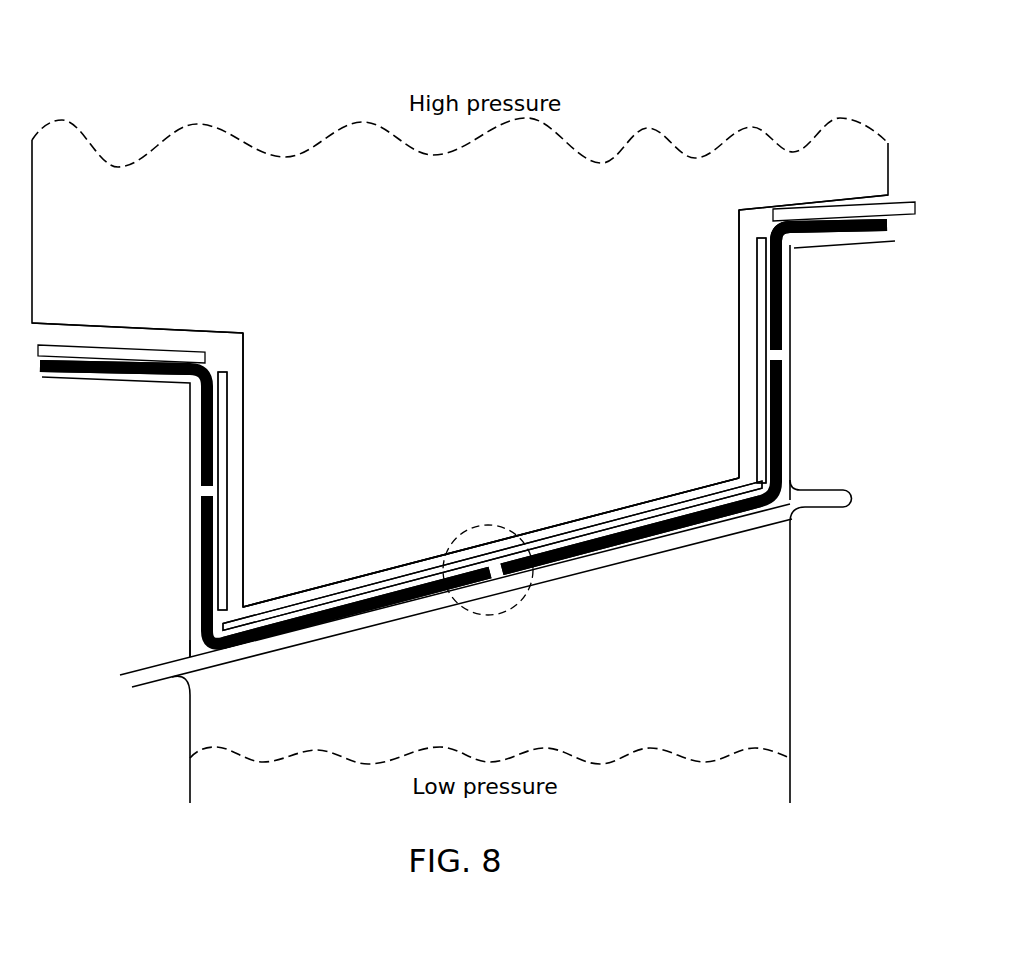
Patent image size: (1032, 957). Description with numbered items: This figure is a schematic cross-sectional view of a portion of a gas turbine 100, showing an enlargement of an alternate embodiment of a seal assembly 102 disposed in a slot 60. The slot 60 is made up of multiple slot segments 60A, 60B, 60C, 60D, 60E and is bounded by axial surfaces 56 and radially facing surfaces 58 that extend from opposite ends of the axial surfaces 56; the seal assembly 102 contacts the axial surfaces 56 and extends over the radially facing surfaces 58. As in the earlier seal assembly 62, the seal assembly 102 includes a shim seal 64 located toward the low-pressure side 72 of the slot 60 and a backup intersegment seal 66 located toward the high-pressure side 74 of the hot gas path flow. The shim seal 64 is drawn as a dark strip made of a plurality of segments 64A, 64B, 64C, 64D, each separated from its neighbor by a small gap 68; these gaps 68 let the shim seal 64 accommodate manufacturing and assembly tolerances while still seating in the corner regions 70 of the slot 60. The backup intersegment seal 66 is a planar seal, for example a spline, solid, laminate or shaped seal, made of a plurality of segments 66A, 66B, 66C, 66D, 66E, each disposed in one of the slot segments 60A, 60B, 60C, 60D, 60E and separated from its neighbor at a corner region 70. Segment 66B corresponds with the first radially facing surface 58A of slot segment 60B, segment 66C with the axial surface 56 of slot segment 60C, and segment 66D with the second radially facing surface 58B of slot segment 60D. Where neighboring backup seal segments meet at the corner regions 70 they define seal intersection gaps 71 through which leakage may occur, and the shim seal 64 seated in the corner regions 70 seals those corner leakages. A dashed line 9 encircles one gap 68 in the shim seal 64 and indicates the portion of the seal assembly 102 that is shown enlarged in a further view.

The gas turbine 100 is at (116, 114).
The radially facing surfaces 58 is at (887, 175).
The first radially facing surface 58A is at (245, 548).
The second radially facing surface 58B is at (739, 414).
The slot 60 is at (802, 497).
The slot segment 60A is at (200, 330).
The slot segment 60B is at (245, 418).
The slot segment 60C is at (581, 519).
The slot segment 60D is at (739, 236).
The slot segment 60E is at (830, 204).
The axial surface 56 is at (638, 501).
The seal assembly 62 is at (321, 578).
The shim seal 64 is at (199, 452).
The shim seal segment 64A is at (96, 380).
The shim seal segment 64B is at (190, 562).
The shim seal segment 64C is at (596, 563).
The shim seal segment 64D is at (858, 234).
The backup intersegment seal 66 is at (228, 497).
The backup seal segment 66A is at (128, 346).
The backup seal segment 66B is at (228, 455).
The backup seal segment 66C is at (528, 541).
The backup seal segment 66D is at (757, 322).
The backup seal segment 66E is at (778, 211).
The gap 68 is at (200, 490).
The corner region 70 is at (189, 385).
The seal intersection gap 71 is at (200, 632).
The low-pressure side 72 is at (398, 634).
The high-pressure side 74 is at (406, 560).
The dashed line 9 is at (460, 631).
The seal assembly 102 is at (738, 357).